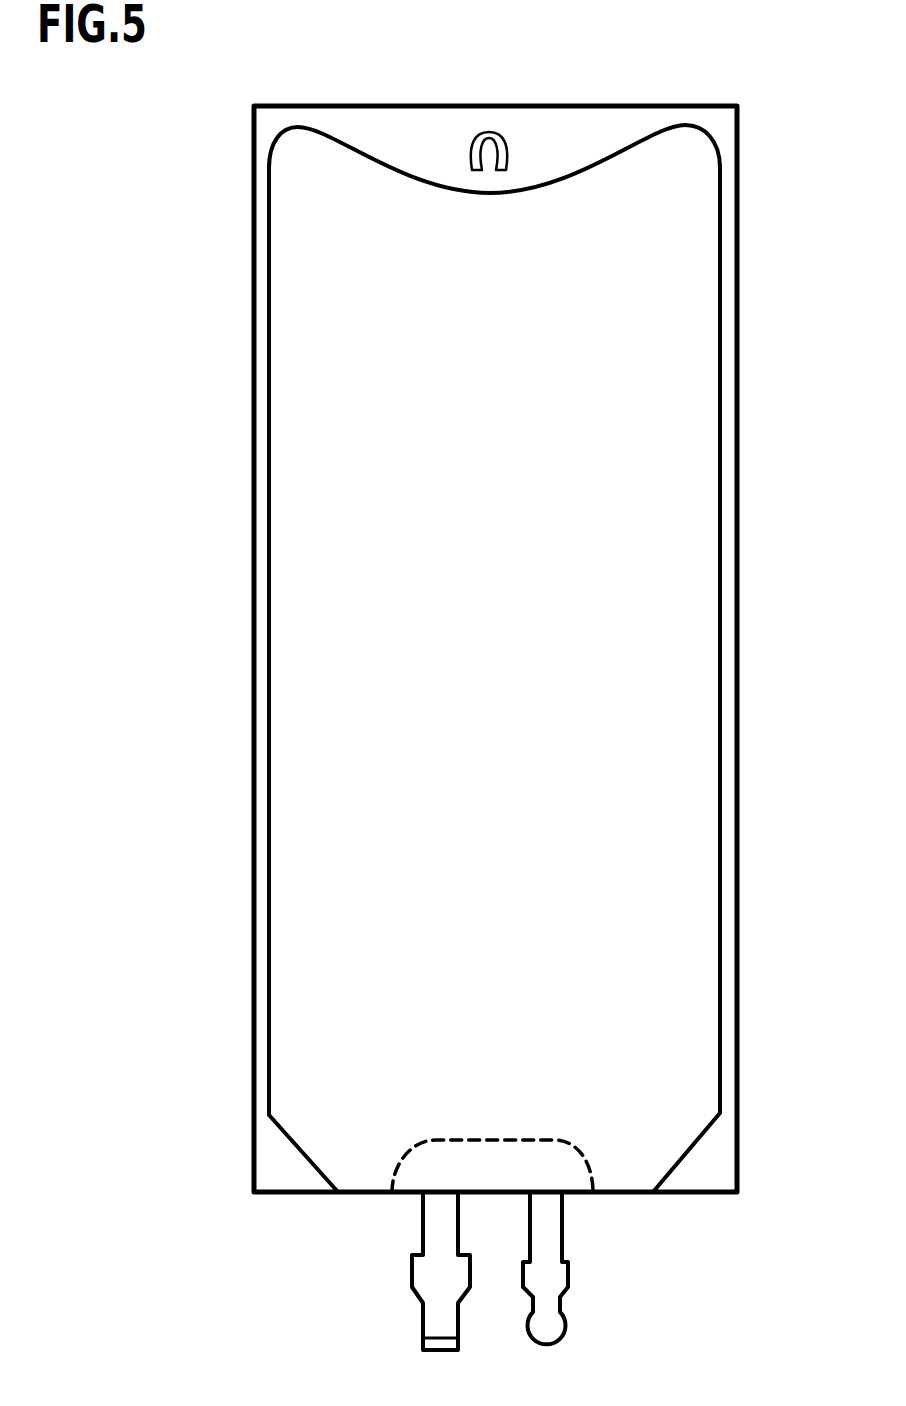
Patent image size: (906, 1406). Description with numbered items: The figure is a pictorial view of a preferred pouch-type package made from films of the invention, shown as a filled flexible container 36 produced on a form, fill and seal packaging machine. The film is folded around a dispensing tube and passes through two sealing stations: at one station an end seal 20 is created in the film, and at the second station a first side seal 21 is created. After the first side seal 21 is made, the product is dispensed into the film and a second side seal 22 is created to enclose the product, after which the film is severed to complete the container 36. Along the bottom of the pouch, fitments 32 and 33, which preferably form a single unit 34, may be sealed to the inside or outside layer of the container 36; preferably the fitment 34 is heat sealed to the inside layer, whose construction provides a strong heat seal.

The end seal 20 is at (567, 130).
The first side seal 21 is at (270, 437).
The second side seal 22 is at (738, 700).
The fitment 32 is at (562, 1248).
The fitment 33 is at (423, 1235).
The single unit 34 is at (602, 1311).
The filled flexible container 36 is at (187, 582).